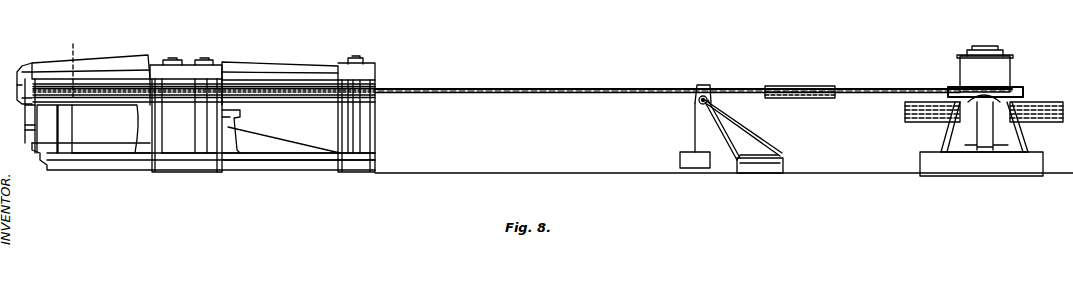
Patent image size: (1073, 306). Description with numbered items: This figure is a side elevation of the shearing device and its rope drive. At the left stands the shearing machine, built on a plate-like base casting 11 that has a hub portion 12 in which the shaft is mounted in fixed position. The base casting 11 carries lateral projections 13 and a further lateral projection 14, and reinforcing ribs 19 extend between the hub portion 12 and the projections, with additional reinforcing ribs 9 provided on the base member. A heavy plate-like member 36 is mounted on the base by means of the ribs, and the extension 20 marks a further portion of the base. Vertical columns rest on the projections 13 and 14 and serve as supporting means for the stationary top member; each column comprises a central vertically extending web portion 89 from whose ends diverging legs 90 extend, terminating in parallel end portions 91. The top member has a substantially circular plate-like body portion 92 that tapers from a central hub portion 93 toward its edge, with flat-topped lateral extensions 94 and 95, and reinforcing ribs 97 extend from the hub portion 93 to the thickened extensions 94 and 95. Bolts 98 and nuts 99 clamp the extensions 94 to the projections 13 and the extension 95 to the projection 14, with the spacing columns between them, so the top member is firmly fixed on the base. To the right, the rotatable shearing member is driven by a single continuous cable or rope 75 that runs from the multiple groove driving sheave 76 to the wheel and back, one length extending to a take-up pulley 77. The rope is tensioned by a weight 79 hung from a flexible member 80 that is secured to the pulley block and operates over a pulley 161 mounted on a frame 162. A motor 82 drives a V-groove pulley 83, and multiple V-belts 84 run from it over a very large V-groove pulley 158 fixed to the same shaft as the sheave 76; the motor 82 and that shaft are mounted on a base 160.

The reinforcing ribs 9 is at (95, 168).
The base casting 11 is at (258, 158).
The hub portion 12 is at (228, 137).
The lateral projections 13 is at (357, 162).
The lateral projection 14 is at (190, 158).
The reinforcing ribs 19 is at (278, 143).
The end block 20 is at (65, 149).
The plate-like member 36 is at (66, 65).
The cable or rope 75 is at (548, 91).
The driving sheave 76 is at (950, 89).
The take-up pulley 77 is at (836, 88).
The weight 79 is at (682, 155).
The flexible member 80 is at (693, 112).
The motor 82 is at (1003, 66).
The V-groove pulley 83 is at (1016, 121).
The V-belts 84 is at (905, 114).
The web portion 89 is at (180, 150).
The diverging legs 90 is at (162, 86).
The parallel end portions 91 is at (375, 122).
The circular body portion 92 is at (276, 78).
The hub portion 93 is at (213, 70).
The lateral extensions 94 is at (22, 68).
The lateral extension 95 is at (185, 69).
The reinforcing ribs 97 is at (100, 66).
The bolts 98 is at (357, 140).
The nuts 99 is at (170, 59).
The V-groove pulley 158 is at (1030, 102).
The base 160 is at (935, 163).
The pulley 161 is at (708, 96).
The frame 162 is at (765, 134).